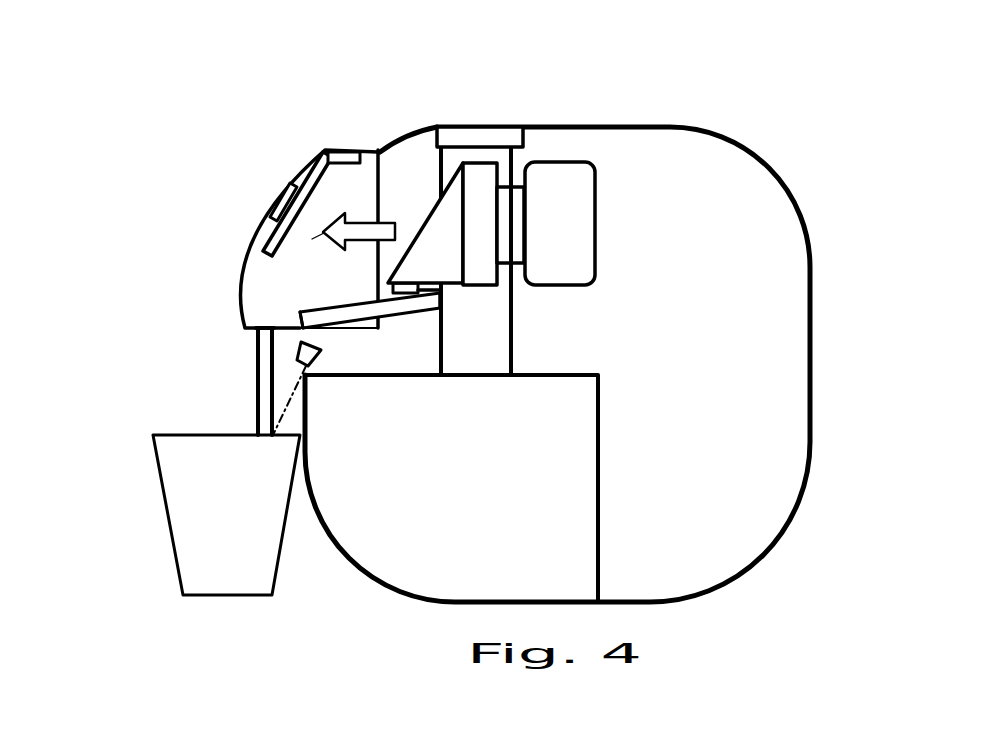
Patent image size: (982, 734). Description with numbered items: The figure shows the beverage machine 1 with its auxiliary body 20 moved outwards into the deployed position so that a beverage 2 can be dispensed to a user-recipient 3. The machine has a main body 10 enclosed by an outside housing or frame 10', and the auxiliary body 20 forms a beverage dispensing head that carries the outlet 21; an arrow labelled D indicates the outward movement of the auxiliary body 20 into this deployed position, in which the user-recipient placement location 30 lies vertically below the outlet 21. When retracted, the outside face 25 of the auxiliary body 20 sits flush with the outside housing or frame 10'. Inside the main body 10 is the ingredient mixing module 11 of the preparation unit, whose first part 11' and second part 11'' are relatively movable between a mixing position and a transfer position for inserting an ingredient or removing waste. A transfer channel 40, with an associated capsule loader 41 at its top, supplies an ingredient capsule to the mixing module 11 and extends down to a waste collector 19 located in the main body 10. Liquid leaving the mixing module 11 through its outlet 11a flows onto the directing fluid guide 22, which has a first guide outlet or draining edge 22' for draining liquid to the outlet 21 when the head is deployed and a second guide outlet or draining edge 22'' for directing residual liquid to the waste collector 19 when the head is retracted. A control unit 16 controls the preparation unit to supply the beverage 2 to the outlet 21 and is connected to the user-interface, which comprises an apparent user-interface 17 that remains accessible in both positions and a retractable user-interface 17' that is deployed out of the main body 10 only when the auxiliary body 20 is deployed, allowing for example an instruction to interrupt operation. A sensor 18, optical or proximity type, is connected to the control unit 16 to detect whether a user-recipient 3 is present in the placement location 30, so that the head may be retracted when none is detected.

The beverage machine 1 is at (155, 55).
The beverage 2 is at (265, 410).
The user-recipient 3 is at (188, 497).
The main body 10 is at (583, 361).
The outside housing or frame 10' is at (612, 139).
The ingredient mixing module 11 is at (367, 210).
The outlet of preparation unit 11a is at (405, 288).
The first part of mixing module 11' is at (527, 265).
The second part of mixing module 11'' is at (607, 223).
The control unit 16 is at (273, 232).
The apparent user-interface 17 is at (273, 177).
The retractable user-interface 17' is at (310, 122).
The sensor 18 is at (320, 352).
The waste collector 19 is at (560, 512).
The auxiliary body 20 is at (240, 187).
The outlet 21 is at (255, 332).
The directing fluid guide 22 is at (312, 334).
The first guide outlet or draining edge 22' is at (240, 284).
The second guide outlet or draining edge 22'' is at (421, 360).
The outside face 25 is at (242, 295).
The user-recipient placement location 30 is at (165, 585).
The transfer channel 40 is at (488, 360).
The capsule loader 41 is at (485, 133).